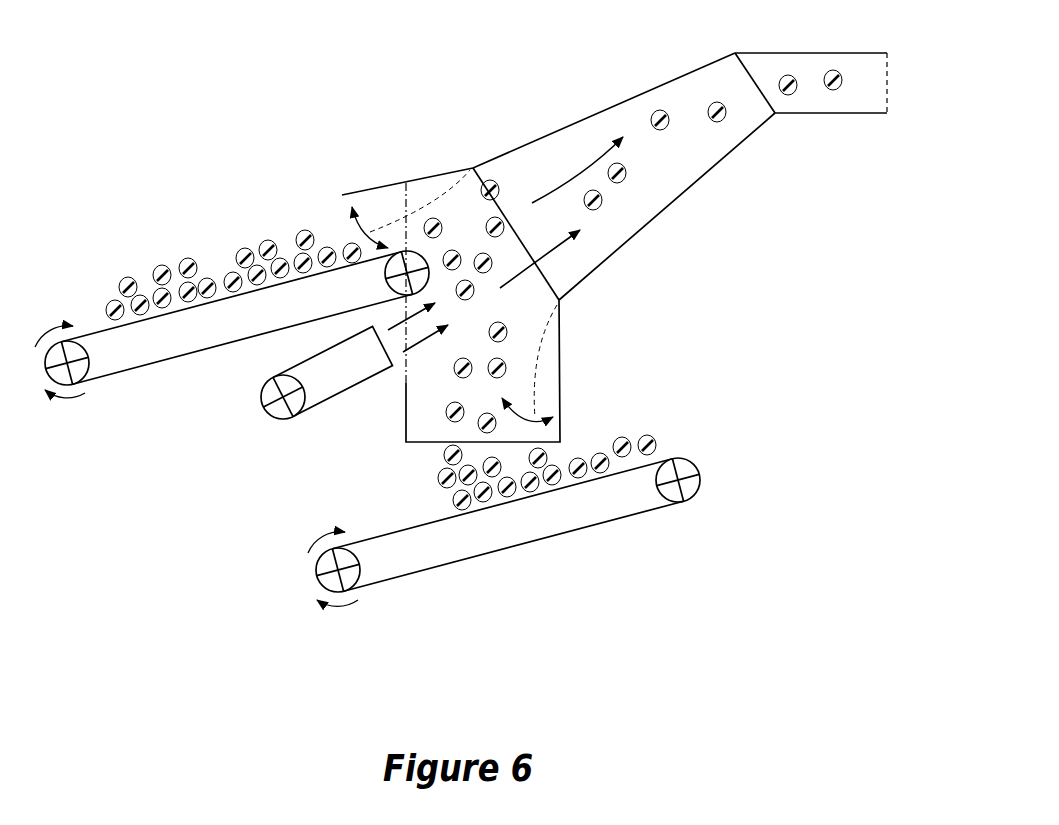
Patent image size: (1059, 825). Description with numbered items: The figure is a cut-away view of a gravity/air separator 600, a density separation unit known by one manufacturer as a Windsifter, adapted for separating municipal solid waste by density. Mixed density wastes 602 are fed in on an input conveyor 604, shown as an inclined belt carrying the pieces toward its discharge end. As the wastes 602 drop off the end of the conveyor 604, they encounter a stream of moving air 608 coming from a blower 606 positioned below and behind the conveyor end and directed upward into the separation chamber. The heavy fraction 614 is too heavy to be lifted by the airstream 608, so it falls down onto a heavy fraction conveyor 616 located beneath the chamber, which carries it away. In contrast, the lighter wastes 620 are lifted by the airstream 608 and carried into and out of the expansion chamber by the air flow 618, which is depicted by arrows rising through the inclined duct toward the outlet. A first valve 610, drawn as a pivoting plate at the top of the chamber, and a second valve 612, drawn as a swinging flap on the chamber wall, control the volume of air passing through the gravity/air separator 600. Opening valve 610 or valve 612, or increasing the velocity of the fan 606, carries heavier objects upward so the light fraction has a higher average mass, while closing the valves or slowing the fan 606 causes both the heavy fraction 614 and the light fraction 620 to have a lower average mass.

The gravity/air separator 600 is at (198, 122).
The mixed density wastes 602 is at (227, 293).
The input conveyor 604 is at (138, 352).
The blower 606 is at (283, 418).
The stream of moving air 608 is at (412, 355).
The first valve 610 is at (430, 175).
The second valve 612 is at (547, 390).
The heavy fraction 614 is at (460, 508).
The heavy fraction conveyor 616 is at (528, 530).
The air flow 618 is at (587, 157).
The lighter wastes 620 is at (793, 97).